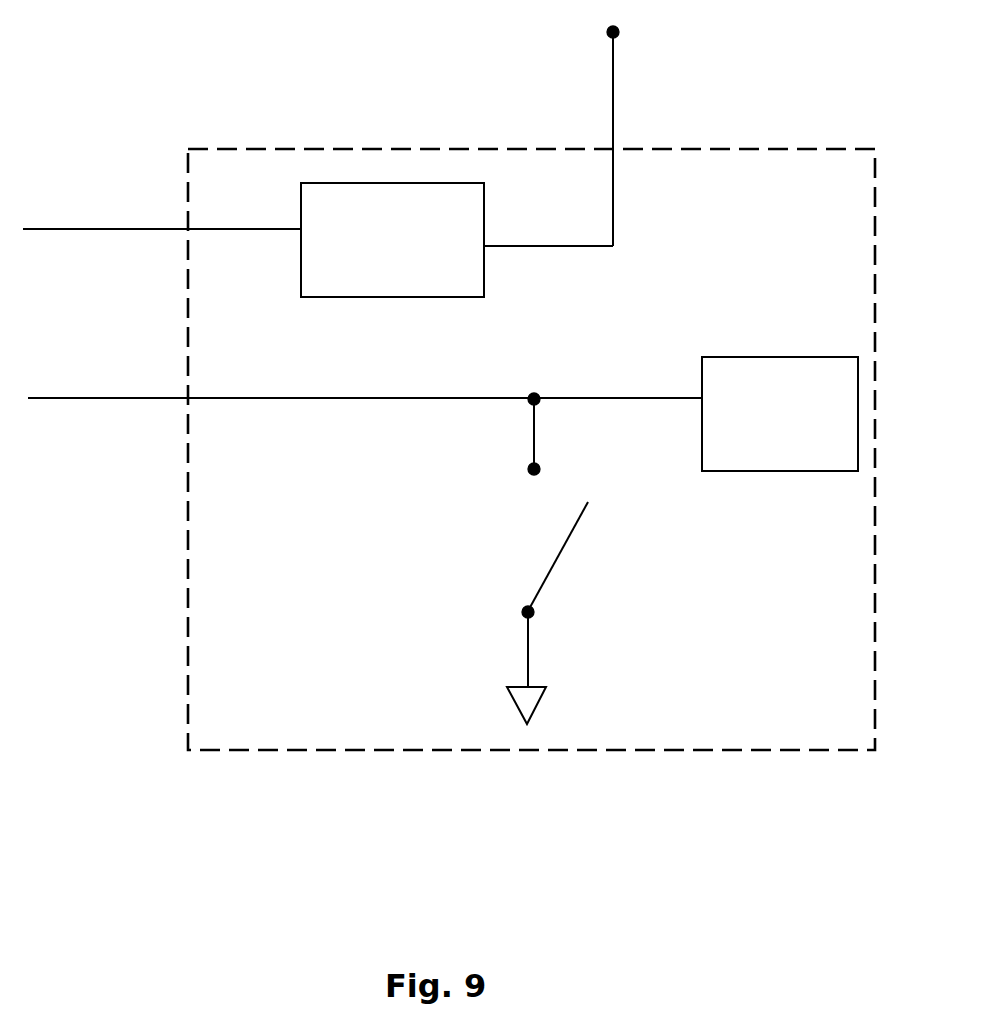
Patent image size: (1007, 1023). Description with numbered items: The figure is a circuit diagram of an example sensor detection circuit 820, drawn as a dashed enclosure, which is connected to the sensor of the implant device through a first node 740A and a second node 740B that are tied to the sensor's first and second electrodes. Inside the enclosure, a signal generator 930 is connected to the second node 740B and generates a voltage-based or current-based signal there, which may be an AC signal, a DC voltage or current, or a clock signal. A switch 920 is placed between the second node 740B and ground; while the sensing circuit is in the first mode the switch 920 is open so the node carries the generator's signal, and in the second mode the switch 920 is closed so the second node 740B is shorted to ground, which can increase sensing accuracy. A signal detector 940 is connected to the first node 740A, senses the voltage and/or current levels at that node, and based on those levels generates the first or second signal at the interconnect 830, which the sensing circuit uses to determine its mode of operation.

The sensor detection circuit 820 is at (237, 119).
The interconnect 830 is at (614, 85).
The first node 740A is at (83, 232).
The second node 740B is at (72, 398).
The signal detector 940 is at (411, 252).
The signal generator 930 is at (797, 425).
The switch 920 is at (529, 527).